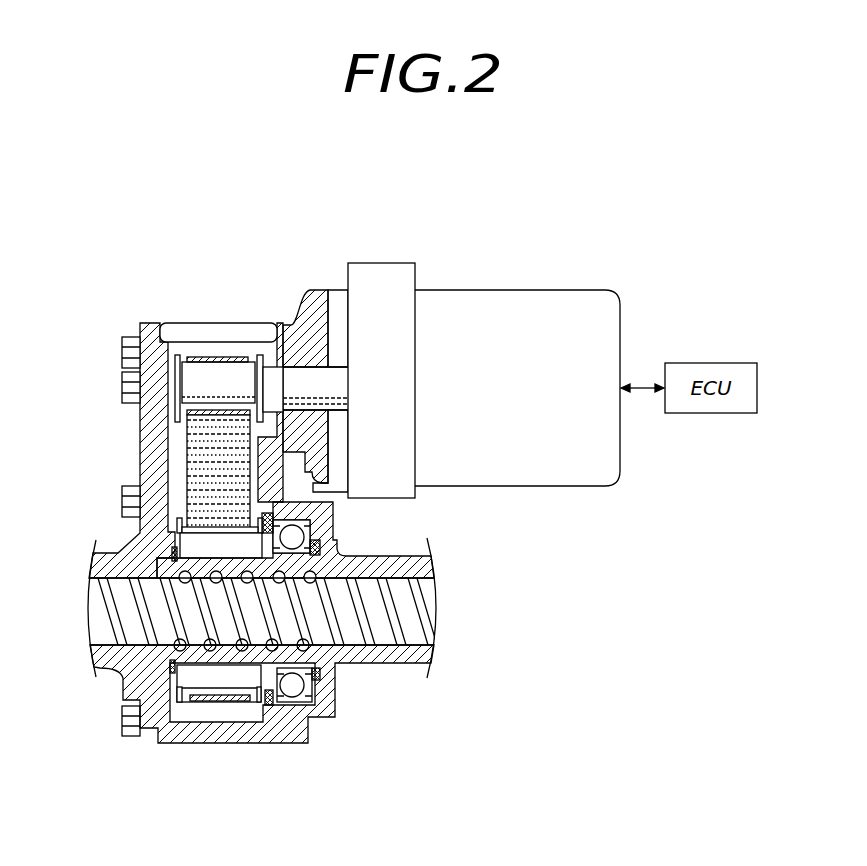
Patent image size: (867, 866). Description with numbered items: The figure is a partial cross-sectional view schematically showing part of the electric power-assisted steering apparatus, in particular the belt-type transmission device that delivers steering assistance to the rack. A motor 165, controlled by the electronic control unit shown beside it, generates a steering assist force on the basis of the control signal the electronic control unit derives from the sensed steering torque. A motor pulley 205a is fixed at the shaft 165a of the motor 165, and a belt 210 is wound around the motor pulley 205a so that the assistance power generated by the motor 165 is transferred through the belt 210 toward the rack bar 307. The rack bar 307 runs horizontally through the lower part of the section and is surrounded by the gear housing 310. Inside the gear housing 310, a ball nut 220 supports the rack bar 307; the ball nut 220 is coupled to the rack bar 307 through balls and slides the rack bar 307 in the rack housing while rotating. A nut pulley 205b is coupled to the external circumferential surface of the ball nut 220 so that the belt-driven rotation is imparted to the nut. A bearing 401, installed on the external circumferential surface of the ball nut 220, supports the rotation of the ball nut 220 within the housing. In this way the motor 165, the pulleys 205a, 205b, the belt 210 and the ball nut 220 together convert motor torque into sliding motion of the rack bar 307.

The motor 165 is at (517, 302).
The shaft 165a is at (302, 378).
The motor pulley 205a is at (220, 377).
The nut pulley 205b is at (205, 683).
The belt 210 is at (193, 460).
The ball nut 220 is at (185, 560).
The rack bar 307 is at (117, 615).
The gear housing 310 is at (218, 738).
The bearing 401 is at (293, 537).